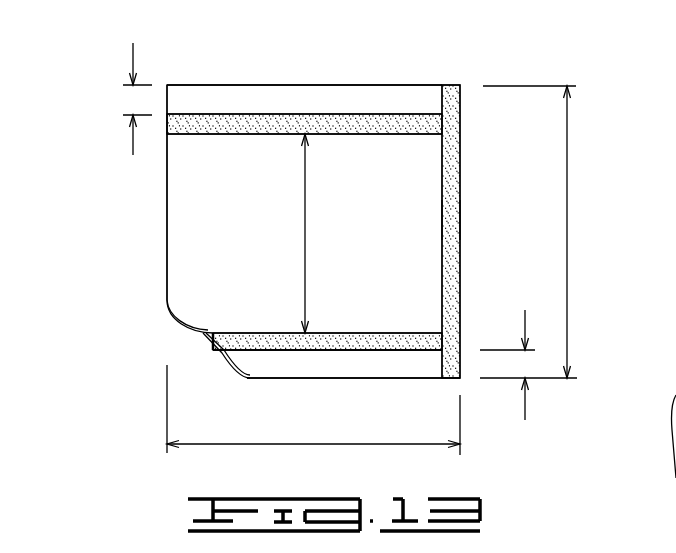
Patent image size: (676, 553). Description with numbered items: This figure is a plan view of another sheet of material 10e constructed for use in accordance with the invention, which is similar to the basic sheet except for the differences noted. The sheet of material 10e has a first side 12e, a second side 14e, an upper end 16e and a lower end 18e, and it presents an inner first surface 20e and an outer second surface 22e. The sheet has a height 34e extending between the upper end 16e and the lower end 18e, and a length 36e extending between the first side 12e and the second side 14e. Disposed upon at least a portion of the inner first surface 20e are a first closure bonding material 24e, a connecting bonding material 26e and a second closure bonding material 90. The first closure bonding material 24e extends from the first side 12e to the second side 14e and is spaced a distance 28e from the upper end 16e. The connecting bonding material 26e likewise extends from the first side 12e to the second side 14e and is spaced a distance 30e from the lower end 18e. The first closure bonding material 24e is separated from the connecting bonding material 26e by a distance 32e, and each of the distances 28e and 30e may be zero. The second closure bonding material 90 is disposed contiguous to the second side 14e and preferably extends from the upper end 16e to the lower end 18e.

The sheet of material 10e is at (252, 53).
The first side 12e is at (167, 203).
The second side 14e is at (460, 166).
The upper end 16e is at (337, 85).
The lower end 18e is at (352, 378).
The inner first surface 20e is at (413, 264).
The outer second surface 22e is at (205, 342).
The first closure bonding material 24e is at (408, 127).
The connecting bonding material 26e is at (345, 342).
The distance 28e is at (133, 50).
The distance 30e is at (527, 412).
The distance 32e is at (308, 238).
The height 34e is at (567, 220).
The length 36e is at (310, 444).
The second closure bonding material 90 is at (452, 222).